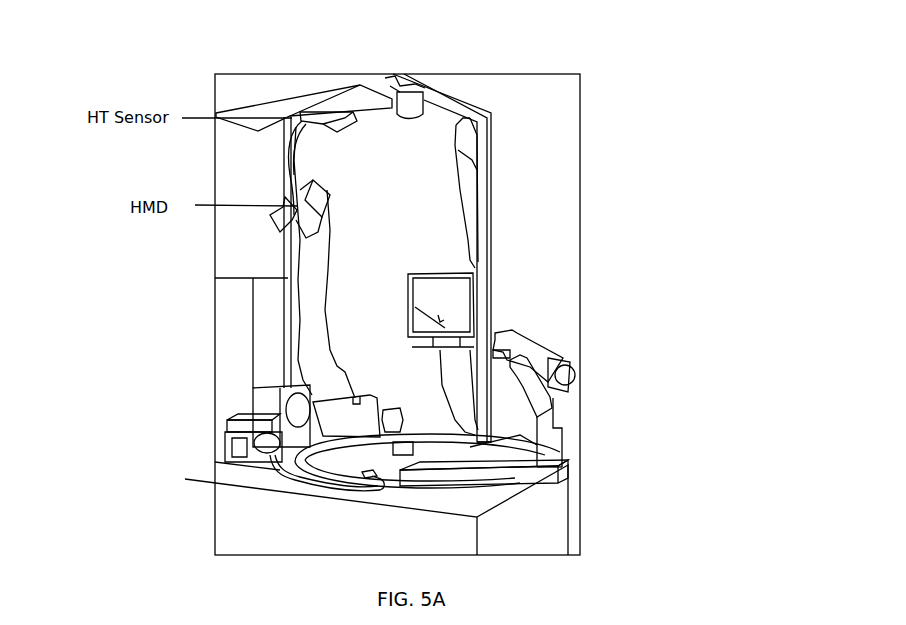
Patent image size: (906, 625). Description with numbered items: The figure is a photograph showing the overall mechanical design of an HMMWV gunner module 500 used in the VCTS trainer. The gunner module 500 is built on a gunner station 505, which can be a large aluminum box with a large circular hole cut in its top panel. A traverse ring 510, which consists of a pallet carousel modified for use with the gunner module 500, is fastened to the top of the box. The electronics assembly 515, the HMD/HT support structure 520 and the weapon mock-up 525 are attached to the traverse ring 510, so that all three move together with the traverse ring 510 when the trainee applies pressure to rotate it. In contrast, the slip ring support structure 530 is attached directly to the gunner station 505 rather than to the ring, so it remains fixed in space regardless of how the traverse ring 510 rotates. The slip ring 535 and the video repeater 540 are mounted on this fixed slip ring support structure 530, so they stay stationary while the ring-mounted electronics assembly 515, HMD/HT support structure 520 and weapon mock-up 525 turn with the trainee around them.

The HMMWV gunner module 500 is at (610, 485).
The gunner station 505 is at (272, 513).
The traverse ring 510 is at (295, 472).
The electronics assembly 515 is at (277, 390).
The HMD/HT support structure 520 is at (288, 259).
The weapon mock-up 525 is at (568, 362).
The slip ring support structure 530 is at (492, 206).
The slip ring 535 is at (424, 104).
The video repeater 540 is at (453, 295).